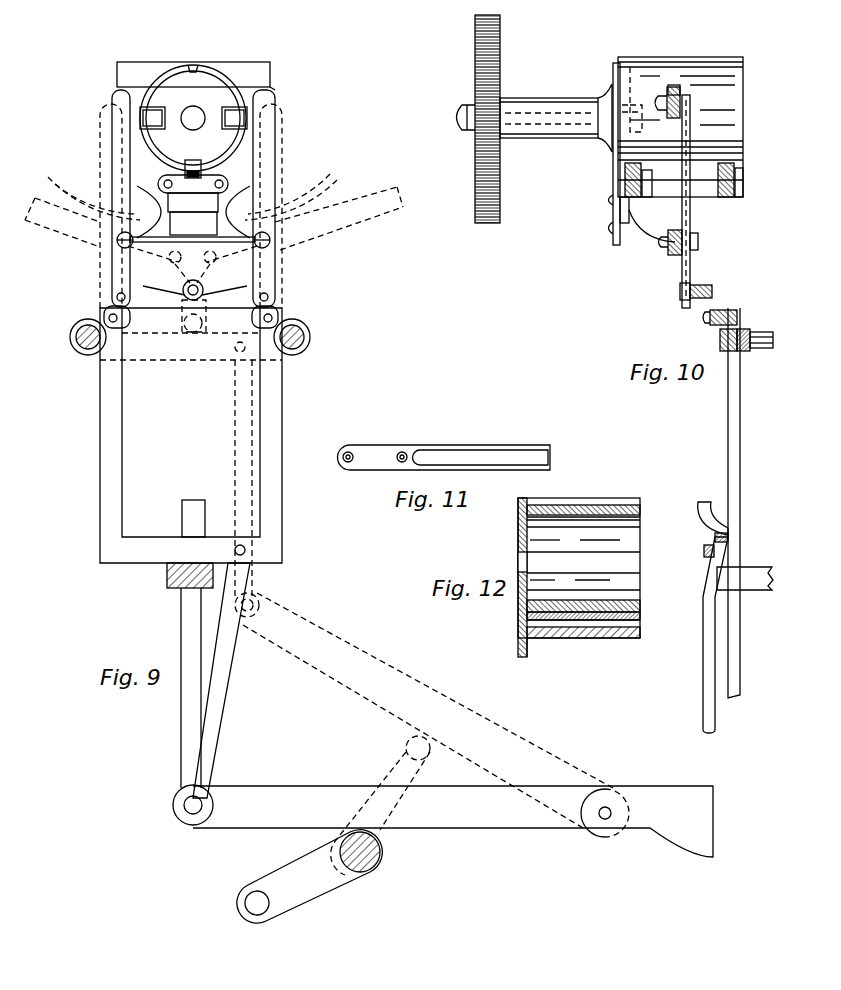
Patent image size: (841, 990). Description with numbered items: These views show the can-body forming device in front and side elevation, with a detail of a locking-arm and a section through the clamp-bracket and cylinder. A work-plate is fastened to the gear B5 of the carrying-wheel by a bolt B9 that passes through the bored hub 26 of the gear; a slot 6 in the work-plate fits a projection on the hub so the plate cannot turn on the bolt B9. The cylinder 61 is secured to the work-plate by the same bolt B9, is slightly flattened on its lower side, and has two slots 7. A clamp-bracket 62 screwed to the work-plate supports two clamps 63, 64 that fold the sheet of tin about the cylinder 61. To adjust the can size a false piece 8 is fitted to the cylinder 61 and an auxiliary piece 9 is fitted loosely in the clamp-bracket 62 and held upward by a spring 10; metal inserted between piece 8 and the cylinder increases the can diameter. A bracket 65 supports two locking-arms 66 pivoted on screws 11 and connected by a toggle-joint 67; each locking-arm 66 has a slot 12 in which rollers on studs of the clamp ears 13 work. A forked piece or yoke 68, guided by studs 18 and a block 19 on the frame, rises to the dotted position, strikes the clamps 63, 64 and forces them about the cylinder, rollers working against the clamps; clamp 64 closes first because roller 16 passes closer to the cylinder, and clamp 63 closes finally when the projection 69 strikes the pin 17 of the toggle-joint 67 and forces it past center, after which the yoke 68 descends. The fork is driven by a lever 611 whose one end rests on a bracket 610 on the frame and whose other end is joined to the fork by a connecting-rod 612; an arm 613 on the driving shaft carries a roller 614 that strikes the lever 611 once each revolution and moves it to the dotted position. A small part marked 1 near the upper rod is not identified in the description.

In FIG. 9, the slot 6 is at (193, 74).
In FIG. 10, the slot 6 is at (606, 94).
In FIG. 9, the cylinder 61 is at (193, 118).
In FIG. 12, the cylinder 61 is at (579, 577).
In FIG. 9, the clamp-bracket 62 is at (193, 212).
In FIG. 12, the clamp-bracket 62 is at (560, 645).
In FIG. 9, the clamp 63 is at (187, 62).
In FIG. 9, the clamp 64 is at (218, 62).
In FIG. 9, the bracket 65 is at (192, 227).
In FIG. 9, the locking-arm 66 is at (277, 108).
In FIG. 10, the locking-arm 66 is at (690, 220).
In FIG. 9, the toggle-joint 67 is at (172, 300).
In FIG. 9, the forked piece 68 is at (191, 333).
In FIG. 10, the forked piece 68 is at (740, 463).
In FIG. 9, the projection 69 is at (193, 518).
In FIG. 10, the projection 69 is at (698, 518).
In FIG. 9, the bracket 610 is at (632, 813).
In FIG. 9, the lever 611 is at (443, 725).
In FIG. 9, the connecting-rod 612 is at (228, 690).
In FIG. 10, the connecting-rod 612 is at (703, 673).
In FIG. 9, the arm 613 is at (333, 829).
In FIG. 9, the roller 614 is at (255, 902).
In FIG. 9, the slots 7 is at (193, 118).
In FIG. 9, the false piece 8 is at (202, 163).
In FIG. 12, the false piece 8 is at (641, 607).
In FIG. 9, the auxiliary piece 9 is at (178, 167).
In FIG. 12, the auxiliary piece 9 is at (641, 617).
In FIG. 12, the spring 10 is at (641, 632).
In FIG. 9, the screws 11 is at (118, 248).
In FIG. 10, the screws 11 is at (699, 241).
In FIG. 11, the slot 12 is at (444, 457).
In FIG. 9, the ear 13 is at (276, 88).
In FIG. 10, the ear 13 is at (681, 95).
In FIG. 9, the roller 16 is at (126, 321).
In FIG. 9, the pin 17 is at (208, 286).
In FIG. 10, the pin 17 is at (713, 291).
In FIG. 9, the studs 18 is at (117, 86).
In FIG. 10, the studs 18 is at (773, 341).
In FIG. 9, the block 19 is at (167, 582).
In FIG. 10, the block 19 is at (745, 578).
In FIG. 10, the joint 1 is at (736, 311).
In FIG. 10, the hub 26 is at (548, 132).
In FIG. 10, the gear B5 is at (475, 58).
In FIG. 10, the bolt B9 is at (452, 118).